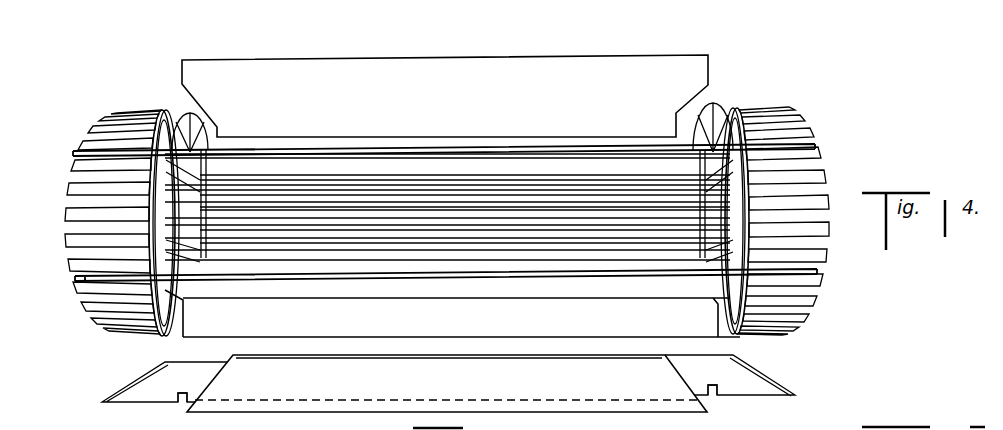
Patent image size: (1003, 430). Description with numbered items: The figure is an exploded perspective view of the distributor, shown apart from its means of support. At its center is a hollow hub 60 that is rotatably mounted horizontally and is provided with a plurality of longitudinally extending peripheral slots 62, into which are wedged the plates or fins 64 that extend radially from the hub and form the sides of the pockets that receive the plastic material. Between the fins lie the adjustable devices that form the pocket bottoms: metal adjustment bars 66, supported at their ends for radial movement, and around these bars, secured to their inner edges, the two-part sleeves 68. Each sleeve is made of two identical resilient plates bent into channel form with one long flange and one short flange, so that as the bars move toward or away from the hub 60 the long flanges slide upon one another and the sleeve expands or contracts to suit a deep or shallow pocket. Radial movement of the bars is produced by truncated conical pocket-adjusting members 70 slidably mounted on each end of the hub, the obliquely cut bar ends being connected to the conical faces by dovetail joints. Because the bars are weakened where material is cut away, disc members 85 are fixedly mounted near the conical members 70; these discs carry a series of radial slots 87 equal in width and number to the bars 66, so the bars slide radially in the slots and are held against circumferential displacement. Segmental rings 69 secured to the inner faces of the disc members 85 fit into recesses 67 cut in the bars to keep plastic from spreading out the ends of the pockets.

The hollow hub 60 is at (440, 200).
The peripheral slots 62 is at (318, 210).
The plates or fins 64 is at (663, 64).
The adjustment bars 66 is at (257, 163).
The recesses 67 is at (178, 403).
The two-part sleeves 68 is at (548, 281).
The segmental rings 69 is at (163, 333).
The pocket-adjusting members 70 is at (813, 187).
The disc members 85 is at (162, 122).
The radial slots 87 is at (174, 212).